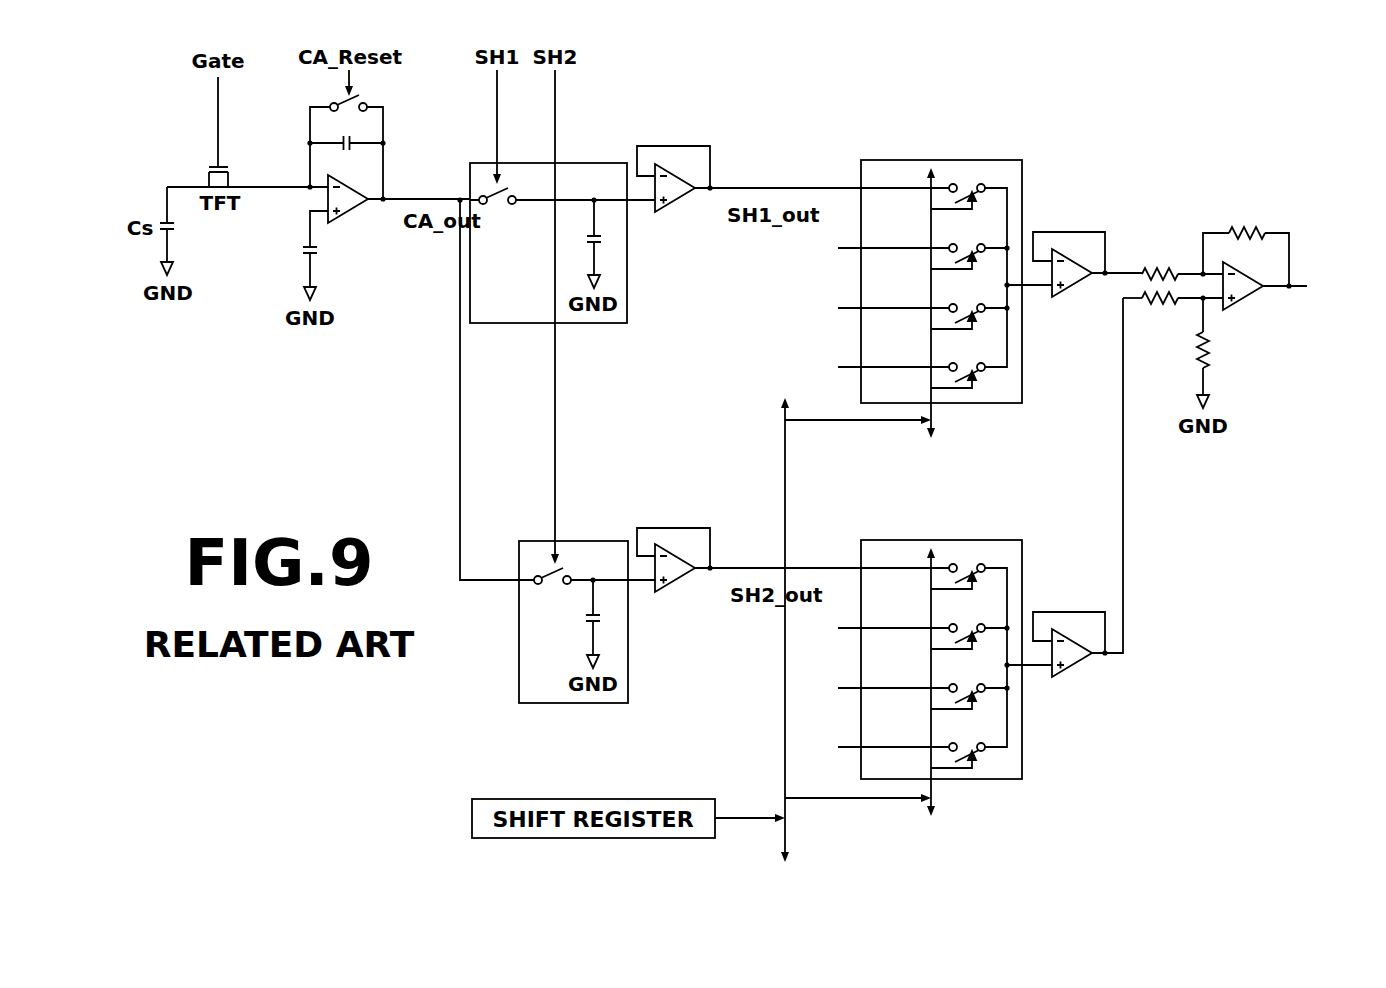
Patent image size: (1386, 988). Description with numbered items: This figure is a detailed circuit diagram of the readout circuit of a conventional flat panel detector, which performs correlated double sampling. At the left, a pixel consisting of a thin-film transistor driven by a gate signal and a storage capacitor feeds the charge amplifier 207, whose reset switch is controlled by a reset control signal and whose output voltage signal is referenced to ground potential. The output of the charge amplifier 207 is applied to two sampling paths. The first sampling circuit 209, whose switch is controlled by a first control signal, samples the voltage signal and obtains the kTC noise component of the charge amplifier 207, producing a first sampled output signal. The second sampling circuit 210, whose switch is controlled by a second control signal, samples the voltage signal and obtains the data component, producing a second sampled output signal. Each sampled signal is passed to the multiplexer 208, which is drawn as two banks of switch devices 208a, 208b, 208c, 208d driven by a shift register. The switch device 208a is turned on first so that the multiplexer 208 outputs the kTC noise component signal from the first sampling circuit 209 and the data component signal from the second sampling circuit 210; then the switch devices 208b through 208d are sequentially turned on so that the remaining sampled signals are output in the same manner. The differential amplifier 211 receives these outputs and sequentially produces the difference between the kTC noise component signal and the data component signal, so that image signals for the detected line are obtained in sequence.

The charge amplifier 207 is at (345, 216).
The multiplexer 208 is at (1022, 172).
The switch device 208a is at (966, 377).
The switch device 208b is at (966, 318).
The switch device 208c is at (966, 258).
The switch device 208d is at (965, 188).
The first sampling circuit 209 is at (627, 275).
The second sampling circuit 210 is at (628, 660).
The differential amplifier 211 is at (1250, 306).